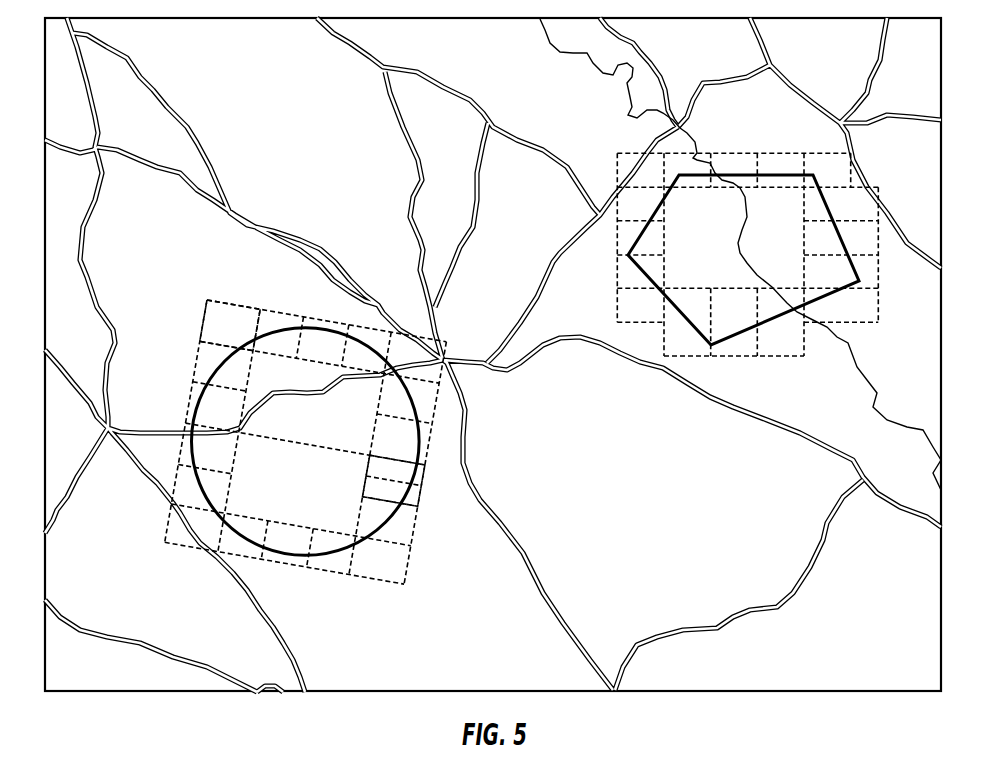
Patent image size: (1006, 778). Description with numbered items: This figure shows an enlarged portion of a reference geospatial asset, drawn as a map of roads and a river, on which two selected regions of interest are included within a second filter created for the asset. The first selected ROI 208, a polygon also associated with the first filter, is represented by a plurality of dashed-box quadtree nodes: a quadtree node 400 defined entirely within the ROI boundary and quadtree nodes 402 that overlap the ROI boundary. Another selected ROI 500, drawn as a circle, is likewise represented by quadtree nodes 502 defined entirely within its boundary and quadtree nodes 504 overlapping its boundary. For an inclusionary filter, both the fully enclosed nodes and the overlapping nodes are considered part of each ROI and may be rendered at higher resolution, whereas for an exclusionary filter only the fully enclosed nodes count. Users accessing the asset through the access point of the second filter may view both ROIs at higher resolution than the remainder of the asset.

The selected ROI 208 is at (693, 328).
The quadtree node 400 is at (787, 175).
The quadtree nodes 402 is at (750, 153).
The selected ROI 500 is at (217, 370).
The quadtree nodes 502 is at (435, 409).
The quadtree nodes 504 is at (183, 453).